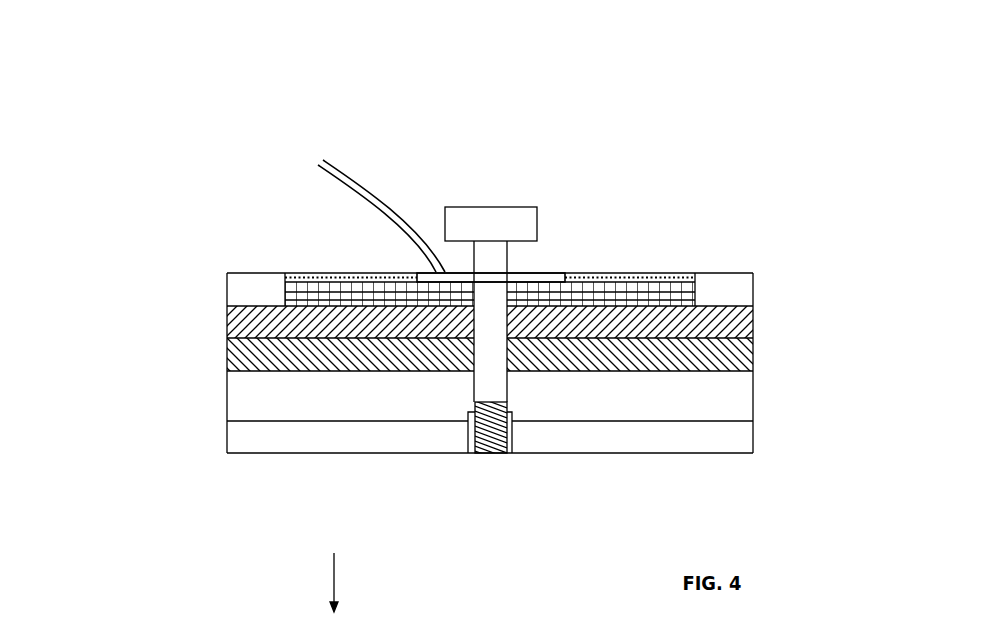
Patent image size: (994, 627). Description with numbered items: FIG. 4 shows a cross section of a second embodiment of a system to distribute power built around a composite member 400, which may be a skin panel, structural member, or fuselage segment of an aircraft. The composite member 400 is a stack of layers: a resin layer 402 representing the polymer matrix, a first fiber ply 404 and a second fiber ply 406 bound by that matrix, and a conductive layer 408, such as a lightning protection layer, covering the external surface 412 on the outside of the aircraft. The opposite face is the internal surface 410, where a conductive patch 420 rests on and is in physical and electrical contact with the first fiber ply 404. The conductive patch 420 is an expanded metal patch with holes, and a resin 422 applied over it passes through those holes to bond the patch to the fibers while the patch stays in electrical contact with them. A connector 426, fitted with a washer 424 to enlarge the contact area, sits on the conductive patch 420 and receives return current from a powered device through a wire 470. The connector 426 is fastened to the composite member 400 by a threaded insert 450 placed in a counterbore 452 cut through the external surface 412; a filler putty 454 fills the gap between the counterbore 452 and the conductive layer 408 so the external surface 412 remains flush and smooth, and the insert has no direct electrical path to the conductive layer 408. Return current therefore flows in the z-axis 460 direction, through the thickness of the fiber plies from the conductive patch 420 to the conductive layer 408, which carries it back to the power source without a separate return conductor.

The composite member 400 is at (252, 157).
The resin layer 402 is at (227, 288).
The first fiber ply 404 is at (227, 323).
The second fiber ply 406 is at (227, 356).
The conductive layer 408 is at (227, 435).
The internal surface 410 is at (710, 272).
The external surface 412 is at (640, 453).
The conductive patch 420 is at (647, 287).
The resin 422 is at (350, 273).
The washer 424 is at (538, 273).
The connector 426 is at (488, 207).
The threaded insert 450 is at (512, 455).
The counterbore 452 is at (482, 474).
The filler putty 454 is at (470, 455).
The z-axis 460 is at (310, 579).
The wire 470 is at (383, 200).